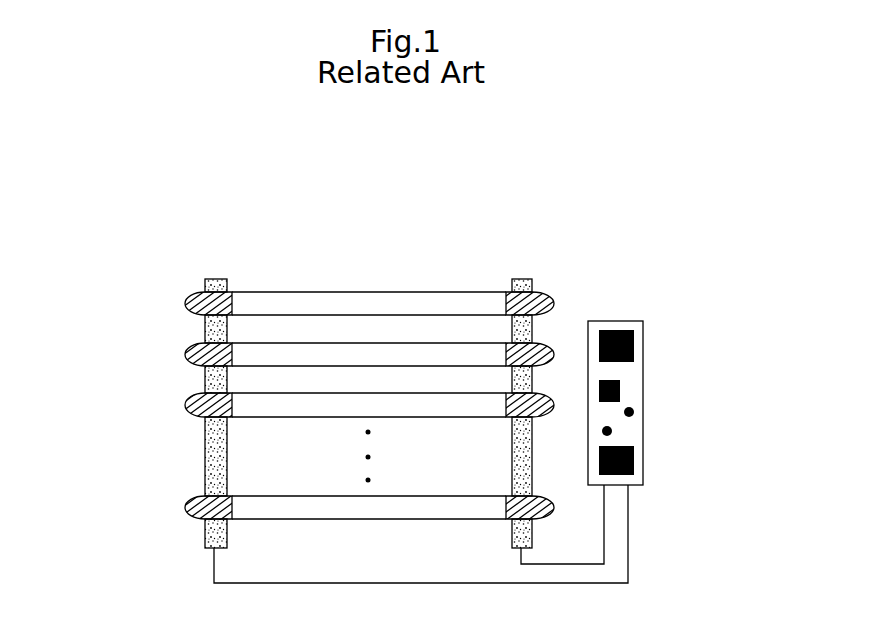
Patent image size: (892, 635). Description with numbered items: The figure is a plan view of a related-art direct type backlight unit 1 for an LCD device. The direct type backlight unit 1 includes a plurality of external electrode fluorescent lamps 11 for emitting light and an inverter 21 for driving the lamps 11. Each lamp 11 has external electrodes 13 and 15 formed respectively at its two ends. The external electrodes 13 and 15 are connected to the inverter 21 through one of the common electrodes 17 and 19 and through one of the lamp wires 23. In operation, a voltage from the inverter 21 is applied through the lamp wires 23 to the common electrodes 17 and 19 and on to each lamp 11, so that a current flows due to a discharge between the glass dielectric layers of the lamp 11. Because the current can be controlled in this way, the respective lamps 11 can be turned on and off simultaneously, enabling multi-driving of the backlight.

The direct type backlight unit 1 is at (600, 199).
The external electrode fluorescent lamp 11 is at (327, 293).
The external electrode 13 is at (192, 300).
The external electrode 15 is at (553, 300).
The common electrode 17 is at (208, 455).
The common electrode 19 is at (521, 283).
The inverter 21 is at (645, 403).
The lamp wire 23 is at (630, 553).